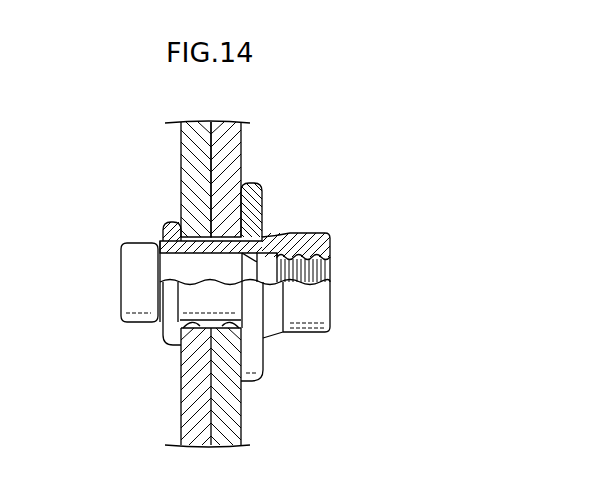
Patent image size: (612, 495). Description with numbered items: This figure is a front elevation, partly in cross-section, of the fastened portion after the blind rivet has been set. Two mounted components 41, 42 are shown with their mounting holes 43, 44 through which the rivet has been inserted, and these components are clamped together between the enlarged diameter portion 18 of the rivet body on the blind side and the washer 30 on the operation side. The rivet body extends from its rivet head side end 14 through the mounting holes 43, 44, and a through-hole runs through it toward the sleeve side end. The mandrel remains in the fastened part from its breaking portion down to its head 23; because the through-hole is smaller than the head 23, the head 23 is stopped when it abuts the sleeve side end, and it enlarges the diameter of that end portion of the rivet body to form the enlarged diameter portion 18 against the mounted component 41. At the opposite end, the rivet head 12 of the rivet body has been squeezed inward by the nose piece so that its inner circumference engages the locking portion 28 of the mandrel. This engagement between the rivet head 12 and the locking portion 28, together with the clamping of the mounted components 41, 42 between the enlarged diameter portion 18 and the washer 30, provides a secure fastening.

The mounted component 41 is at (193, 128).
The mounted component 42 is at (224, 128).
The washer 30 is at (249, 183).
The enlarged diameter portion 18 is at (168, 223).
The head 23 is at (125, 243).
The rivet head 12 is at (292, 233).
The locking portion 28 is at (318, 233).
The rivet head side end 14 is at (330, 315).
The mounting hole 43 is at (178, 330).
The mounting hole 44 is at (251, 378).